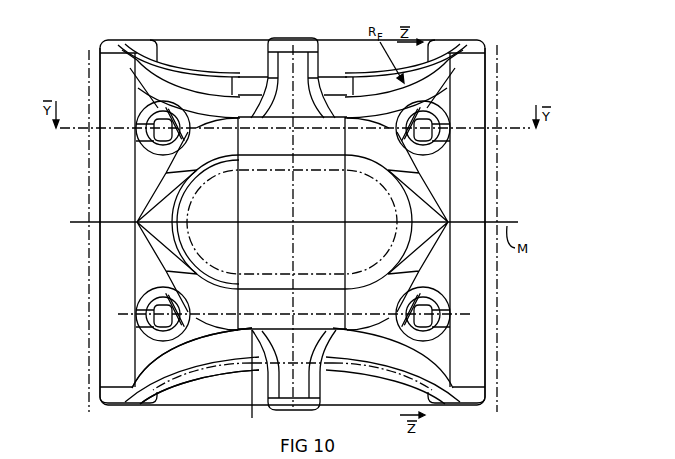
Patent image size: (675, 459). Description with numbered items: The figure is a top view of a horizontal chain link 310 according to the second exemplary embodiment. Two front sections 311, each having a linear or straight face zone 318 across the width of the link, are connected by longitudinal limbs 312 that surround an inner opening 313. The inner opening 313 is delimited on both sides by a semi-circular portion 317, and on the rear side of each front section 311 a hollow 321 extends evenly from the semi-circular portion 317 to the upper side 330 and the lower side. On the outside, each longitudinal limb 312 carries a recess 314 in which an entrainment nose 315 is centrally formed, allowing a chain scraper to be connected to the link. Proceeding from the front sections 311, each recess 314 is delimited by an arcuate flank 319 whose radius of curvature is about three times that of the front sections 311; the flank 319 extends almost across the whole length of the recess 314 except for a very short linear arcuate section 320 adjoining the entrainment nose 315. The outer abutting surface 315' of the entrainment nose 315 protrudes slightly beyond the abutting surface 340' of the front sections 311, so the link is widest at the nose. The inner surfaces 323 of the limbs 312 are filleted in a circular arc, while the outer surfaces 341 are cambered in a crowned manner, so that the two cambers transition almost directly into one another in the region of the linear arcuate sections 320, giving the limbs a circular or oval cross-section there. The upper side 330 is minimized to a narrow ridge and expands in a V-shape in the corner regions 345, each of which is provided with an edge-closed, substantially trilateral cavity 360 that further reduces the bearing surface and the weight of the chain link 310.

The horizontal chain link 310 is at (524, 76).
The front section 311 is at (470, 198).
The longitudinal limb 312 is at (212, 102).
The inner opening 313 is at (279, 199).
The recess 314 is at (215, 418).
The entrainment nose 315 is at (304, 373).
The outer abutting surface 315' is at (292, 231).
The semi-circular portion 317 is at (183, 215).
The face zone 318 is at (98, 170).
The arcuate flank 319 is at (170, 397).
The linear arcuate section 320 is at (239, 378).
The hollow 321 is at (155, 232).
The inner surface 323 is at (331, 141).
The upper side 330 is at (167, 458).
The abutting surface 340' is at (471, 416).
The outer surface 341 is at (377, 100).
The corner region 345 is at (438, 343).
The cavity 360 is at (440, 300).